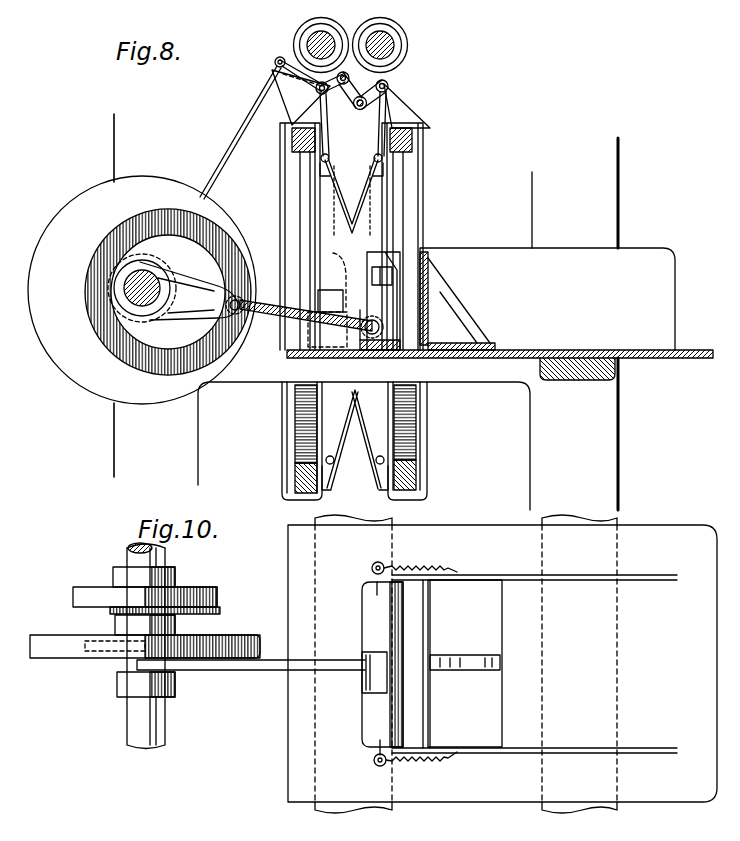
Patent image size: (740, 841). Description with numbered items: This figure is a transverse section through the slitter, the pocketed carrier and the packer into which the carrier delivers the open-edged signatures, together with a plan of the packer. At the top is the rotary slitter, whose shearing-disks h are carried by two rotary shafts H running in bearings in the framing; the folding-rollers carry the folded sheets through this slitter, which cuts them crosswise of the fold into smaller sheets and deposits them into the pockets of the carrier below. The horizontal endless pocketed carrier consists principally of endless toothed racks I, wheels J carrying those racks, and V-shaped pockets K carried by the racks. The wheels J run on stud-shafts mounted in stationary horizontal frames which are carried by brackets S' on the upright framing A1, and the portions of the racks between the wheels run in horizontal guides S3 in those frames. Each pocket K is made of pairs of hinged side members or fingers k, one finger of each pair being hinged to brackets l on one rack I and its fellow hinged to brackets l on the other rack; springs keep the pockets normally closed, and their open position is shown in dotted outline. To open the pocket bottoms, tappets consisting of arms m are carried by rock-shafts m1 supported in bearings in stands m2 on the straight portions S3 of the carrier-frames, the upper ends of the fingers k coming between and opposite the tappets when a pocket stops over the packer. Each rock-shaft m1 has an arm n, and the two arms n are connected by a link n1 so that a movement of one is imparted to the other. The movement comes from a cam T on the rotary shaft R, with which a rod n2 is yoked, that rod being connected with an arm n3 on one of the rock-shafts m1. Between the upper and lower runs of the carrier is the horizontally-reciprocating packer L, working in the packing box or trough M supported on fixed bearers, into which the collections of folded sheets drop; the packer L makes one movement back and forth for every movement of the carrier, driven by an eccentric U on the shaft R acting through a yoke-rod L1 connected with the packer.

In FIG. 8, the rotary shaft H is at (300, 40).
In FIG. 8, the shearing-disk h is at (316, 40).
In FIG. 8, the arm n3 is at (274, 66).
In FIG. 8, the rod n2 is at (262, 97).
In FIG. 10, the rod n2 is at (179, 607).
In FIG. 8, the stand m2 is at (290, 118).
In FIG. 8, the tappet arm m is at (312, 88).
In FIG. 8, the arm n is at (346, 90).
In FIG. 8, the link n1 is at (358, 112).
In FIG. 8, the rock-shaft m1 is at (398, 84).
In FIG. 8, the hinged side member k is at (353, 260).
In FIG. 8, the bracket l is at (316, 170).
In FIG. 8, the endless toothed rack I is at (292, 150).
In FIG. 8, the horizontal guide S3 is at (292, 140).
In FIG. 8, the wheel J is at (438, 450).
In FIG. 8, the upright framing A1 is at (413, 312).
In FIG. 8, the packing box or trough M is at (547, 299).
In FIG. 10, the packing box or trough M is at (502, 664).
In FIG. 8, the packer L is at (354, 301).
In FIG. 10, the packer L is at (519, 664).
In FIG. 8, the eccentric U is at (110, 250).
In FIG. 8, the rotary shaft R is at (160, 292).
In FIG. 10, the rotary shaft R is at (128, 722).
In FIG. 8, the yoke-rod L1 is at (306, 321).
In FIG. 10, the yoke-rod L1 is at (280, 676).
In FIG. 8, the pocket K is at (355, 439).
In FIG. 8, the bracket S' is at (347, 441).
In FIG. 10, the cam T is at (92, 592).